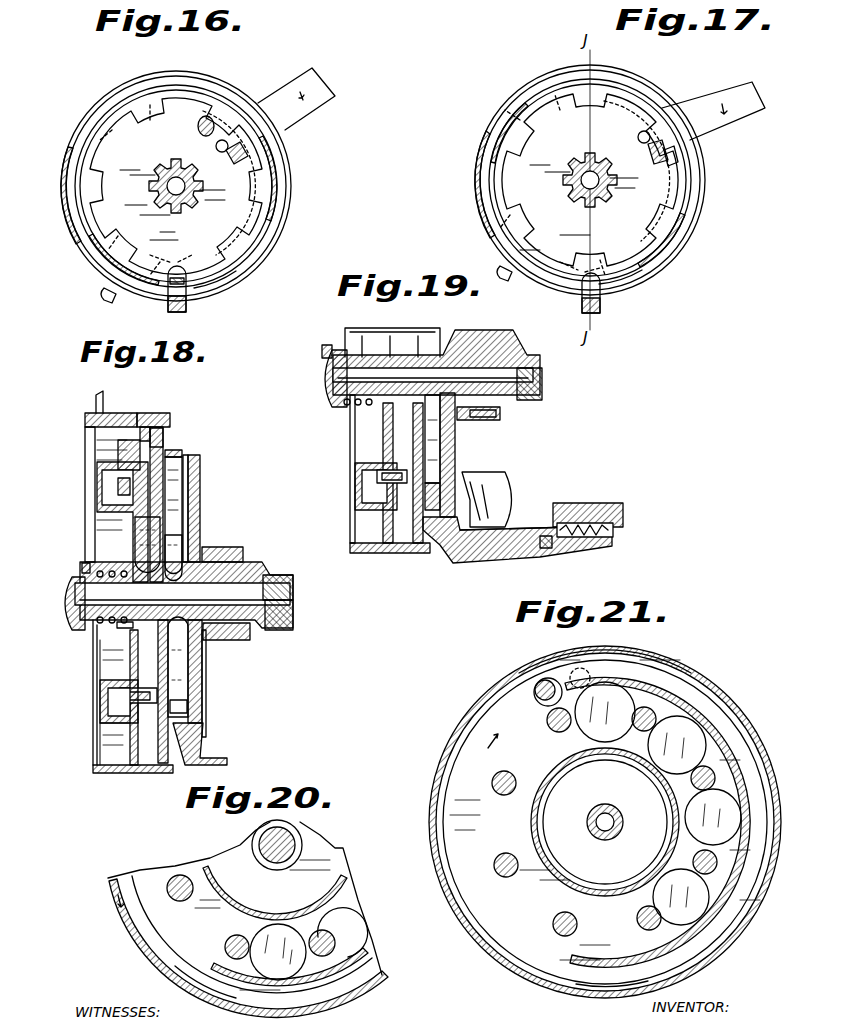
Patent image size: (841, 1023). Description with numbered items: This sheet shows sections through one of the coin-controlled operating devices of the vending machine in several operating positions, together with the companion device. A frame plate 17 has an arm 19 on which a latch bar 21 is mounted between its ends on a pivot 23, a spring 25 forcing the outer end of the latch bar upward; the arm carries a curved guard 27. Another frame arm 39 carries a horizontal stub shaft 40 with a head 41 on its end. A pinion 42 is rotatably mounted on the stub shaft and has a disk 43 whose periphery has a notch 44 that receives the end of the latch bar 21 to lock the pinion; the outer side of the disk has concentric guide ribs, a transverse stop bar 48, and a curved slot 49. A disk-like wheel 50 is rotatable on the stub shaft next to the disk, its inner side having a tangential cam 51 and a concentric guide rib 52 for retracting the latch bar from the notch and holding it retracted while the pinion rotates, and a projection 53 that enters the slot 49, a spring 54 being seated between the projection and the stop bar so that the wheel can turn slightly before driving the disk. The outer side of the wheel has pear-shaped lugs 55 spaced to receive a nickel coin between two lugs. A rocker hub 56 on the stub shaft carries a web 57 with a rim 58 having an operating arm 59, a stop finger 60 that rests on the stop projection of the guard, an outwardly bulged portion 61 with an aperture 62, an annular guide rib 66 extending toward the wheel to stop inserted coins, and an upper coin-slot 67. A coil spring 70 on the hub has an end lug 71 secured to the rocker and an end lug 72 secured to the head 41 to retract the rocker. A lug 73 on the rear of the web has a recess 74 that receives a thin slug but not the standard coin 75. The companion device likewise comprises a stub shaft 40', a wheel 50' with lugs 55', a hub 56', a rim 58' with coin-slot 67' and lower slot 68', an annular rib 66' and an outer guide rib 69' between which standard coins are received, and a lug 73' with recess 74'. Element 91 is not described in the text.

In FIG. 19, the frame plate 17 is at (600, 503).
In FIG. 19, the arm 19 is at (517, 530).
In FIG. 16, the latch bar 21 is at (186, 300).
In FIG. 17, the latch bar 21 is at (601, 296).
In FIG. 18, the latch bar 21 is at (204, 756).
In FIG. 19, the latch bar 21 is at (462, 563).
In FIG. 19, the pivot 23 is at (546, 550).
In FIG. 19, the spring 25 is at (608, 535).
In FIG. 19, the curved guard 27 is at (495, 482).
In FIG. 18, the arm 39 is at (282, 630).
In FIG. 19, the arm 39 is at (528, 400).
In FIG. 16, the stub shaft 40 is at (160, 180).
In FIG. 17, the stub shaft 40 is at (575, 179).
In FIG. 18, the stub shaft 40 is at (235, 642).
In FIG. 19, the stub shaft 40 is at (490, 422).
In FIG. 18, the head 41 is at (72, 624).
In FIG. 19, the head 41 is at (322, 402).
In FIG. 16, the pinion 42 is at (150, 186).
In FIG. 17, the pinion 42 is at (565, 186).
In FIG. 18, the pinion 42 is at (238, 547).
In FIG. 19, the pinion 42 is at (498, 420).
In FIG. 16, the disk 43 is at (140, 118).
In FIG. 17, the disk 43 is at (540, 110).
In FIG. 18, the disk 43 is at (204, 493).
In FIG. 19, the disk 43 is at (455, 440).
In FIG. 16, the notch 44 is at (112, 252).
In FIG. 17, the notch 44 is at (675, 212).
In FIG. 18, the notch 44 is at (189, 458).
In FIG. 16, the stop bar 48 is at (258, 250).
In FIG. 17, the stop bar 48 is at (652, 280).
In FIG. 16, the curved slot 49 is at (206, 116).
In FIG. 17, the curved slot 49 is at (676, 162).
In FIG. 16, the wheel 50 is at (195, 172).
In FIG. 17, the wheel 50 is at (598, 180).
In FIG. 18, the wheel 50 is at (179, 591).
In FIG. 19, the wheel 50 is at (408, 495).
In FIG. 16, the cam 51 is at (172, 268).
In FIG. 17, the cam 51 is at (575, 270).
In FIG. 18, the cam 51 is at (188, 712).
In FIG. 19, the cam 51 is at (476, 492).
In FIG. 16, the guide rib 52 is at (216, 278).
In FIG. 17, the guide rib 52 is at (636, 288).
In FIG. 18, the guide rib 52 is at (182, 453).
In FIG. 19, the guide rib 52 is at (484, 500).
In FIG. 16, the projection 53 is at (216, 146).
In FIG. 17, the projection 53 is at (640, 130).
In FIG. 16, the spring 54 is at (250, 146).
In FIG. 17, the spring 54 is at (668, 156).
In FIG. 18, the lug 55 is at (105, 586).
In FIG. 19, the lug 55 is at (358, 474).
In FIG. 18, the hub 56 is at (163, 595).
In FIG. 19, the hub 56 is at (413, 362).
In FIG. 18, the web 57 is at (133, 540).
In FIG. 19, the web 57 is at (385, 528).
In FIG. 16, the rim 58 is at (173, 186).
In FIG. 17, the rim 58 is at (590, 180).
In FIG. 18, the rim 58 is at (109, 591).
In FIG. 19, the rim 58 is at (390, 491).
In FIG. 16, the operating arm 59 is at (306, 93).
In FIG. 17, the operating arm 59 is at (730, 98).
In FIG. 18, the operating arm 59 is at (96, 402).
In FIG. 16, the stop finger 60 is at (63, 188).
In FIG. 17, the stop finger 60 is at (477, 150).
In FIG. 18, the bulged portion 61 is at (100, 712).
In FIG. 19, the bulged portion 61 is at (362, 493).
In FIG. 18, the aperture 62 is at (115, 732).
In FIG. 18, the annular guide rib 66 is at (184, 615).
In FIG. 19, the annular guide rib 66 is at (452, 452).
In FIG. 18, the coin-slot 67 is at (148, 412).
In FIG. 18, the coil spring 70 is at (100, 624).
In FIG. 19, the coil spring 70 is at (360, 332).
In FIG. 18, the end lug 71 is at (124, 628).
In FIG. 19, the end lug 71 is at (350, 408).
In FIG. 18, the end lug 72 is at (82, 568).
In FIG. 19, the end lug 72 is at (326, 345).
In FIG. 18, the lug 73 is at (170, 424).
In FIG. 18, the recess 74 is at (98, 455).
In FIG. 18, the standard coin 75 is at (182, 470).
In FIG. 20, the standard coin 75 is at (275, 930).
In FIG. 21, the standard coin 75 is at (608, 700).
In FIG. 16, the hook 91 is at (106, 298).
In FIG. 17, the hook 91 is at (506, 278).
In FIG. 20, the rim 58' is at (227, 919).
In FIG. 21, the rim 58' is at (605, 822).
In FIG. 20, the wheel 50' is at (252, 922).
In FIG. 21, the wheel 50' is at (605, 822).
In FIG. 20, the coin slot 68' is at (167, 975).
In FIG. 21, the coin slot 68' is at (612, 945).
In FIG. 20, the annular guide rib 66' is at (275, 889).
In FIG. 21, the annular guide rib 66' is at (582, 822).
In FIG. 20, the guide rib 69' is at (272, 967).
In FIG. 21, the guide rib 69' is at (657, 819).
In FIG. 20, the hub 56' is at (296, 845).
In FIG. 21, the hub 56' is at (614, 814).
In FIG. 20, the stub shaft 40' is at (253, 844).
In FIG. 21, the stub shaft 40' is at (590, 810).
In FIG. 20, the lug 55' is at (251, 896).
In FIG. 21, the lug 55' is at (605, 795).
In FIG. 21, the lug 73' is at (539, 668).
In FIG. 21, the recess 74' is at (533, 698).
In FIG. 21, the coin-slot 67' is at (605, 650).